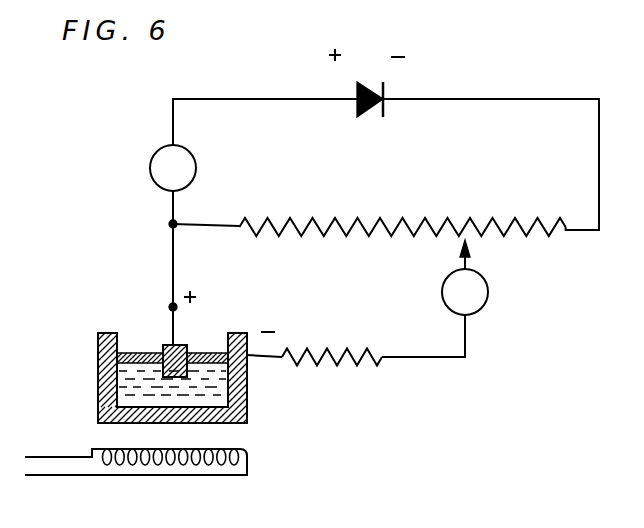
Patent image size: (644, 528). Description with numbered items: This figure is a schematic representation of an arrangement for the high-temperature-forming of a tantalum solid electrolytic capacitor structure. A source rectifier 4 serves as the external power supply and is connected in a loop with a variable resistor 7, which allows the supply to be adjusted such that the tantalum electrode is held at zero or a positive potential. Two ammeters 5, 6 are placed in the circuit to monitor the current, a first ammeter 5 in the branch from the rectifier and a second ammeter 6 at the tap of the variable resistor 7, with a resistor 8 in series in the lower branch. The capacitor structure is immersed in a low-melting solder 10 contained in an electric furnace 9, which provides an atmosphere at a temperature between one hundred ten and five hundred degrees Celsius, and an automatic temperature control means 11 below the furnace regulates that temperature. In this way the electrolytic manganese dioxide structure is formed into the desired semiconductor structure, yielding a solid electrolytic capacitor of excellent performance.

The source rectifier 4 is at (387, 93).
The ammeter 5 is at (154, 185).
The ammeter 6 is at (488, 298).
The variable resistor 7 is at (449, 214).
The resistor 8 is at (359, 348).
The electric furnace 9 is at (243, 402).
The low-melting solder 10 is at (125, 391).
The automatic temperature control means 11 is at (147, 470).